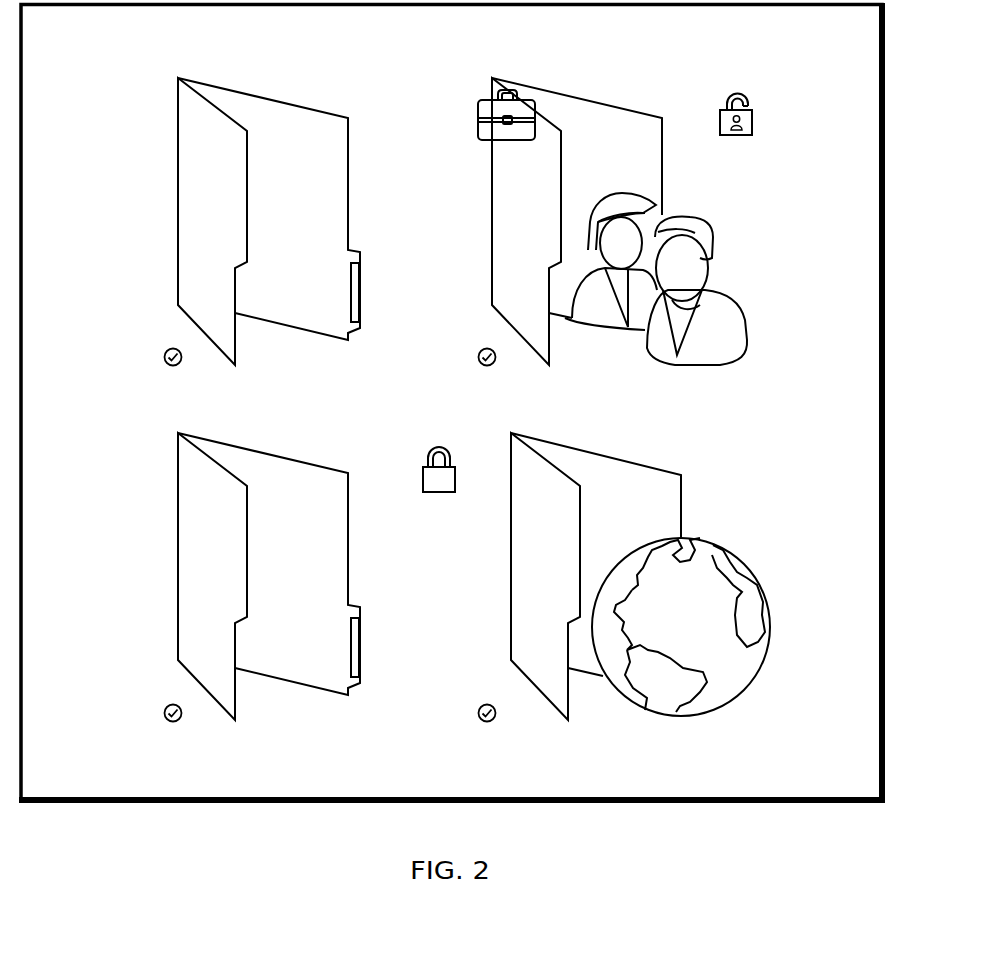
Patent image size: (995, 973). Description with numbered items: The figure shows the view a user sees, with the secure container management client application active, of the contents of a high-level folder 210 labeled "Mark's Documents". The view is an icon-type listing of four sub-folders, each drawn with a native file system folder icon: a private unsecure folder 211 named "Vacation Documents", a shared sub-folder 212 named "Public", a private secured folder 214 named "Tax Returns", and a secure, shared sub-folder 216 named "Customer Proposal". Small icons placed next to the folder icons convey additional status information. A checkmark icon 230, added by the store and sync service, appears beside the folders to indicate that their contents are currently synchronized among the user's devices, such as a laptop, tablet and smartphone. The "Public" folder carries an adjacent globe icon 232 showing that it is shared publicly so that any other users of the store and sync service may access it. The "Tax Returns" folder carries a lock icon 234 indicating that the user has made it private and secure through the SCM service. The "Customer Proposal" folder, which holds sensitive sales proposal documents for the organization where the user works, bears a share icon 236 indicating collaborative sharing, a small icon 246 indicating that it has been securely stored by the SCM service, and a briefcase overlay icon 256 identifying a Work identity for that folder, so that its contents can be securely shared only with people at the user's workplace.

The high-level folder 210 is at (573, 44).
The private unsecure folder 211 is at (350, 175).
The secure, shared sub-folder 216 is at (662, 175).
The private secured folder 214 is at (348, 553).
The shared sub-folder 212 is at (682, 510).
The briefcase overlay icon 256 is at (480, 101).
The small icon 246 is at (752, 122).
The share icon 236 is at (738, 305).
The lock icon 234 is at (421, 478).
The globe icon 232 is at (760, 613).
The checkmark icon 230 is at (164, 357).